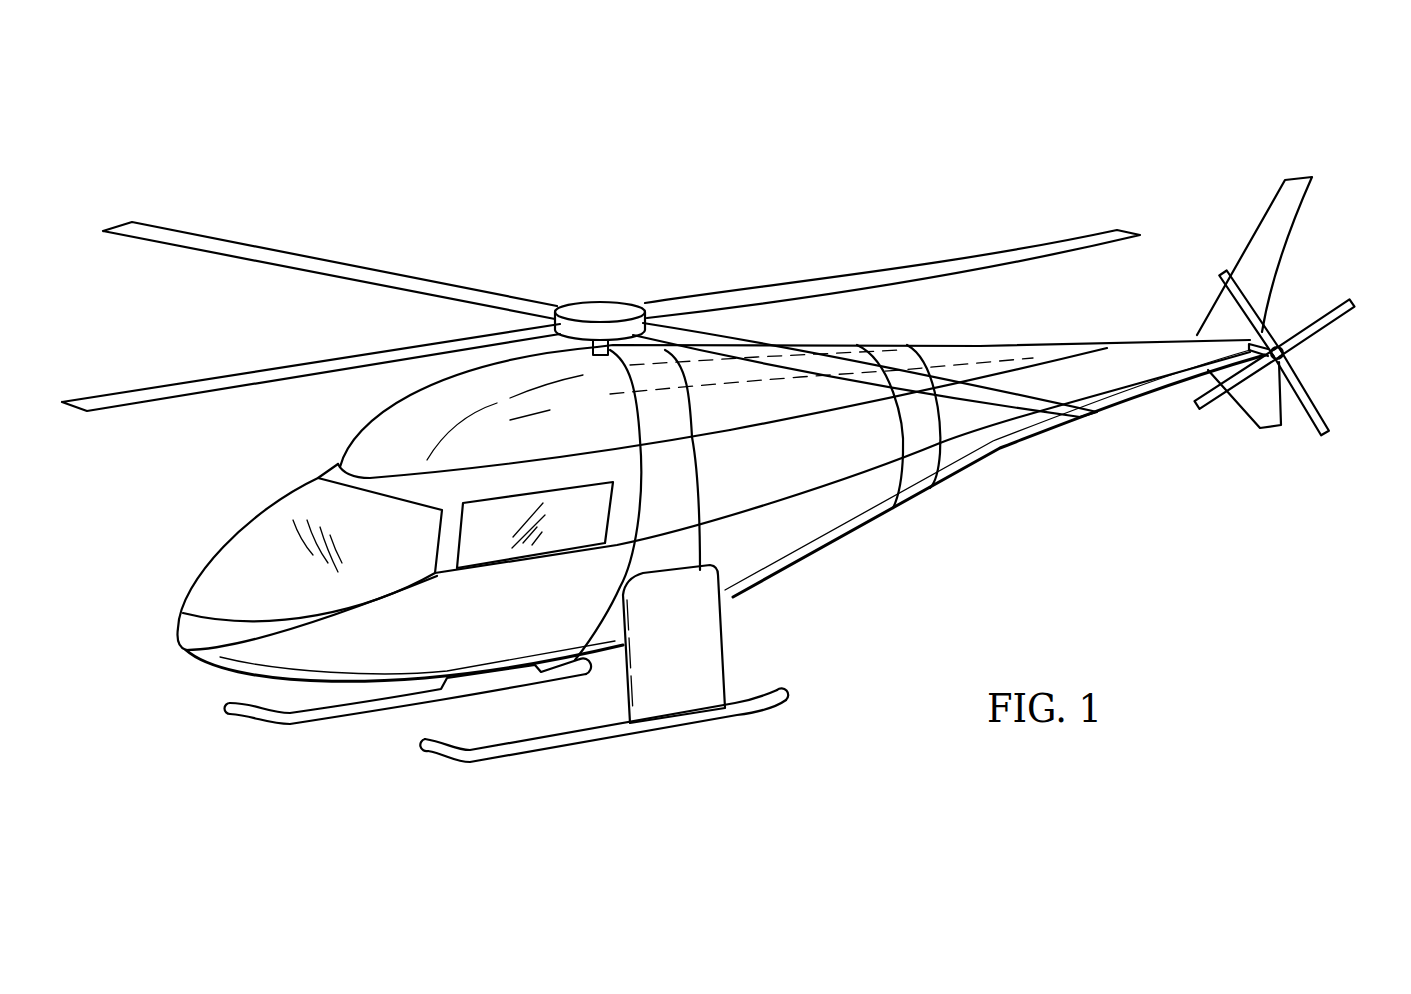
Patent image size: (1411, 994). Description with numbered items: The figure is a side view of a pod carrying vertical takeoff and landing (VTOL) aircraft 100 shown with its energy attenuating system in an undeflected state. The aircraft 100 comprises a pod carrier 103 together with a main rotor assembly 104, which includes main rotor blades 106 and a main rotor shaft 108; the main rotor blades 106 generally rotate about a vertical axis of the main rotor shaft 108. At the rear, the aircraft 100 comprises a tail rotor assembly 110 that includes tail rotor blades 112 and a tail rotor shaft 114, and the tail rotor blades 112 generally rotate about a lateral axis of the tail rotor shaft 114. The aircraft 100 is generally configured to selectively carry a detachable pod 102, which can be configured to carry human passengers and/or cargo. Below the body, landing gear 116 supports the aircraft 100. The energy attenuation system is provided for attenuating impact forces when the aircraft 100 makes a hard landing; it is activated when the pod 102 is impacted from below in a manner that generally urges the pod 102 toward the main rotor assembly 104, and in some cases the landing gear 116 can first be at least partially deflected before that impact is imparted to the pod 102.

The vertical takeoff and landing (VTOL) aircraft 100 is at (366, 152).
The detachable pod 102 is at (477, 648).
The pod carrier 103 is at (800, 545).
The main rotor assembly 104 is at (625, 289).
The main rotor blades 106 is at (886, 268).
The main rotor shaft 108 is at (595, 356).
The tail rotor assembly 110 is at (1328, 364).
The tail rotor blades 112 is at (1313, 428).
The tail rotor shaft 114 is at (1266, 334).
The landing gear 116 is at (688, 728).